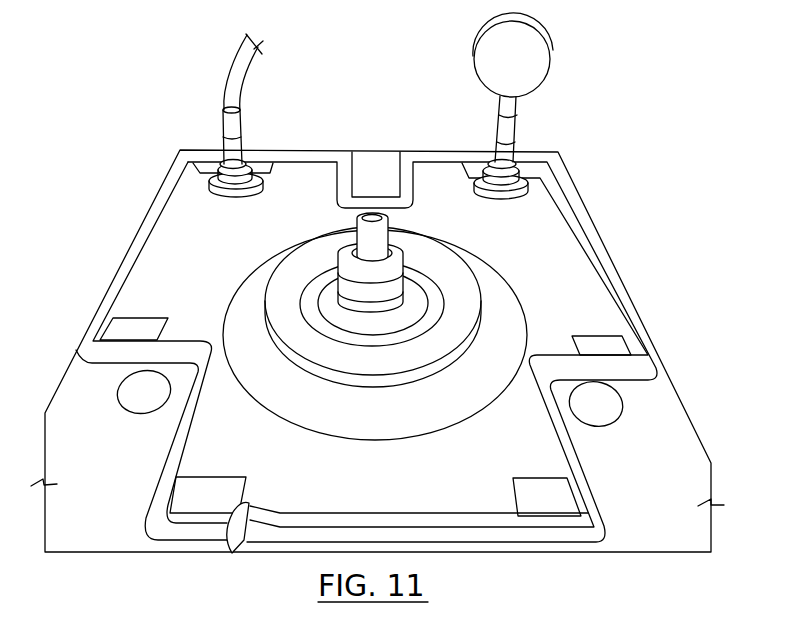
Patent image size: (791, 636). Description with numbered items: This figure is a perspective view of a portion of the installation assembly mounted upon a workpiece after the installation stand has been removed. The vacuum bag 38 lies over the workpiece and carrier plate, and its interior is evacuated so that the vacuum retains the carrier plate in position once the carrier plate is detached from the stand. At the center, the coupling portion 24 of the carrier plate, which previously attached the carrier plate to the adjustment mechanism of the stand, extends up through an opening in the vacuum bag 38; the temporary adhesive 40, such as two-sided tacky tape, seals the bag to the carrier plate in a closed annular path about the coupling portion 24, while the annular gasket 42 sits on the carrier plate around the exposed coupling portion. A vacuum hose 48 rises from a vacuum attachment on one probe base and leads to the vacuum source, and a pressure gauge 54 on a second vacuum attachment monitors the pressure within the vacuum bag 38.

The coupling portion 24 is at (343, 272).
The vacuum bag 38 is at (567, 297).
The temporary adhesive 40 is at (410, 283).
The gasket 42 is at (465, 288).
The vacuum hose 48 is at (235, 63).
The pressure gauge 54 is at (533, 53).